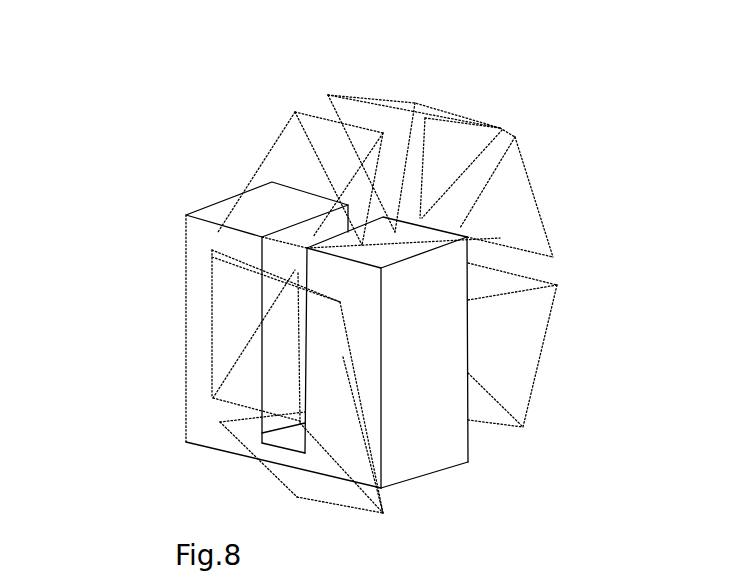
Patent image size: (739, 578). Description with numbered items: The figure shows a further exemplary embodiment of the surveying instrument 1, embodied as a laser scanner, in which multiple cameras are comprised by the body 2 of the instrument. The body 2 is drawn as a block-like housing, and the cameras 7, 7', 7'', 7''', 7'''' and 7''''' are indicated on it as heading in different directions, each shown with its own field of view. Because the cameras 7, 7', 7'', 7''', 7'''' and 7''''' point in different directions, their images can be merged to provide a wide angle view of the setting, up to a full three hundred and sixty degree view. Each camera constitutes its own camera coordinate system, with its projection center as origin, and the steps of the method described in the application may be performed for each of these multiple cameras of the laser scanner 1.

The surveying instrument 1 is at (133, 236).
The body 2 is at (431, 462).
The camera 7 is at (374, 398).
The camera 7' is at (359, 190).
The camera 7'' is at (361, 416).
The camera 7''' is at (508, 277).
The camera 7'''' is at (415, 163).
The camera 7''''' is at (457, 387).